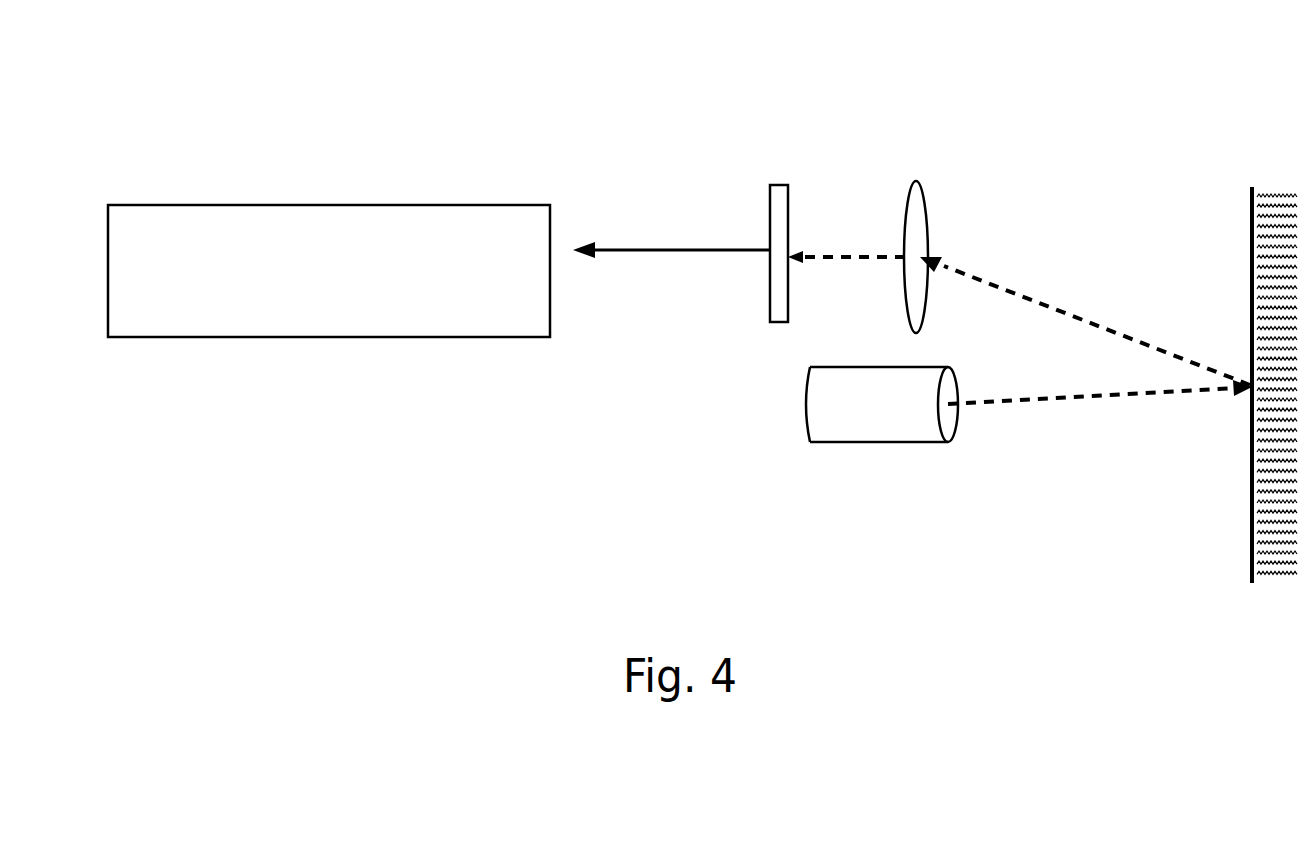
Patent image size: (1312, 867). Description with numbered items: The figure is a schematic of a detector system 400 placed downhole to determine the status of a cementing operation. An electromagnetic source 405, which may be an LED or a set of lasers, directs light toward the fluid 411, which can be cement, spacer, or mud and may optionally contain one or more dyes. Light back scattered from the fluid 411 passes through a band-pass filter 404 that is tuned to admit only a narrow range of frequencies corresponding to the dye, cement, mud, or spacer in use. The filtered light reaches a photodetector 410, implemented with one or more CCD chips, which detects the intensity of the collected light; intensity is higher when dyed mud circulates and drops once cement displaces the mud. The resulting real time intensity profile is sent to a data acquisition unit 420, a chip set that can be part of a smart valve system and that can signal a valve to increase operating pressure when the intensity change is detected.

The detector system 400 is at (403, 93).
The band-pass filter 404 is at (926, 202).
The electromagnetic source 405 is at (881, 443).
The photodetector 410 is at (770, 197).
The fluid 411 is at (1250, 275).
The data acquisition unit 420 is at (327, 338).